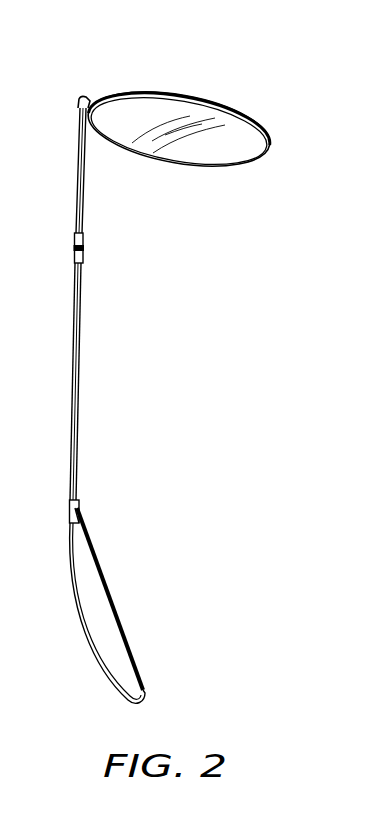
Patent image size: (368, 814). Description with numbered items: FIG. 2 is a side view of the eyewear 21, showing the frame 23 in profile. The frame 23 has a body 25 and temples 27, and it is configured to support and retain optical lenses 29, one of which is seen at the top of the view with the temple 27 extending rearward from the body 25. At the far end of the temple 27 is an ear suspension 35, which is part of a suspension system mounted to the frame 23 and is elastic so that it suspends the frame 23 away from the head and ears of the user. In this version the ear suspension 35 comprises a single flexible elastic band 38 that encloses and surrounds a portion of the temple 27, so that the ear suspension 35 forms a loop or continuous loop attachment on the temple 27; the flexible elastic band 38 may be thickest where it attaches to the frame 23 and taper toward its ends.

The eyewear 21 is at (82, 45).
The optical lenses 29 is at (193, 115).
The body 25 is at (78, 173).
The frame 23 is at (80, 280).
The temples 27 is at (75, 400).
The flexible elastic band 38 is at (100, 565).
The ear suspension 35 is at (160, 593).